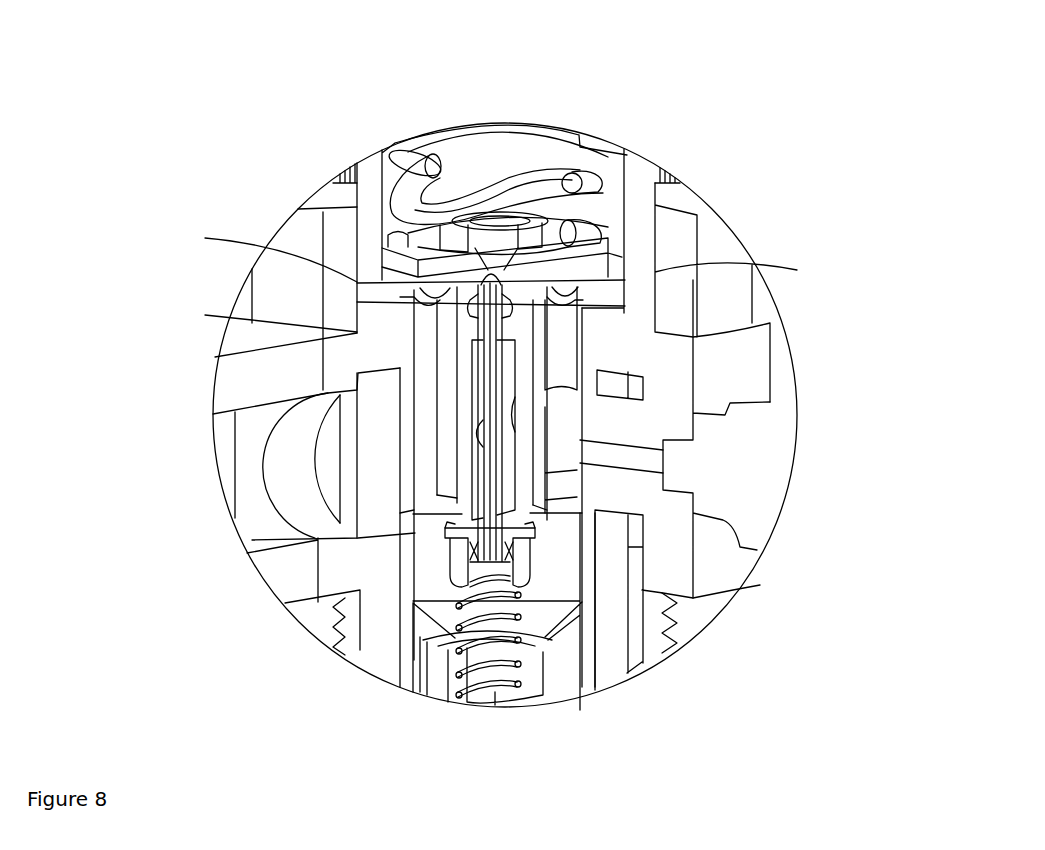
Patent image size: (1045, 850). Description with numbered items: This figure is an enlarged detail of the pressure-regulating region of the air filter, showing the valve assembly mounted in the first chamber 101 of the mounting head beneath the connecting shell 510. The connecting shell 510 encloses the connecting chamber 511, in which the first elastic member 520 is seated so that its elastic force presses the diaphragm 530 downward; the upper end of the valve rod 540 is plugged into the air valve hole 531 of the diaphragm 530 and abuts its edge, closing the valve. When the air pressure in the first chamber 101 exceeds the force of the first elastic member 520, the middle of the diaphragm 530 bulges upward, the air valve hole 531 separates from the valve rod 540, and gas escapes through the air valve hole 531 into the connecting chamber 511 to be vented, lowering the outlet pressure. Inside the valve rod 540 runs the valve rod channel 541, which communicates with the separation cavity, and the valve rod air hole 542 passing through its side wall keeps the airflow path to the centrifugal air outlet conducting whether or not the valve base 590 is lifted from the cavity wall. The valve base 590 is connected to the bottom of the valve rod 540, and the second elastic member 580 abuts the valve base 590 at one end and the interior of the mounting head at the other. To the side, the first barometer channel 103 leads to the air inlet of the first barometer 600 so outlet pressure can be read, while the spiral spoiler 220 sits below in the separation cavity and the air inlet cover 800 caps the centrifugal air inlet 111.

The first chamber 101 is at (413, 298).
The first barometer channel 103 is at (647, 452).
The centrifugal air inlet 111 is at (305, 520).
The spiral spoiler 220 is at (440, 675).
The connecting shell 510 is at (643, 215).
The connecting chamber 511 is at (557, 152).
The first elastic member 520 is at (450, 177).
The diaphragm 530 is at (605, 282).
The air valve hole 531 is at (483, 250).
The valve rod 540 is at (485, 355).
The valve rod channel 541 is at (490, 403).
The valve rod air hole 542 is at (490, 505).
The second elastic member 580 is at (510, 617).
The valve base 590 is at (528, 550).
The first barometer 600 is at (735, 482).
The air inlet cover 800 is at (232, 510).